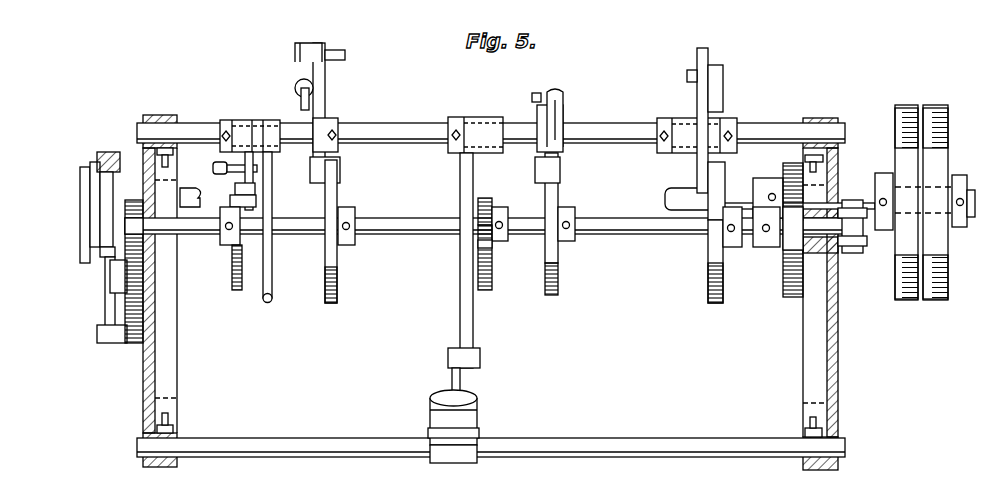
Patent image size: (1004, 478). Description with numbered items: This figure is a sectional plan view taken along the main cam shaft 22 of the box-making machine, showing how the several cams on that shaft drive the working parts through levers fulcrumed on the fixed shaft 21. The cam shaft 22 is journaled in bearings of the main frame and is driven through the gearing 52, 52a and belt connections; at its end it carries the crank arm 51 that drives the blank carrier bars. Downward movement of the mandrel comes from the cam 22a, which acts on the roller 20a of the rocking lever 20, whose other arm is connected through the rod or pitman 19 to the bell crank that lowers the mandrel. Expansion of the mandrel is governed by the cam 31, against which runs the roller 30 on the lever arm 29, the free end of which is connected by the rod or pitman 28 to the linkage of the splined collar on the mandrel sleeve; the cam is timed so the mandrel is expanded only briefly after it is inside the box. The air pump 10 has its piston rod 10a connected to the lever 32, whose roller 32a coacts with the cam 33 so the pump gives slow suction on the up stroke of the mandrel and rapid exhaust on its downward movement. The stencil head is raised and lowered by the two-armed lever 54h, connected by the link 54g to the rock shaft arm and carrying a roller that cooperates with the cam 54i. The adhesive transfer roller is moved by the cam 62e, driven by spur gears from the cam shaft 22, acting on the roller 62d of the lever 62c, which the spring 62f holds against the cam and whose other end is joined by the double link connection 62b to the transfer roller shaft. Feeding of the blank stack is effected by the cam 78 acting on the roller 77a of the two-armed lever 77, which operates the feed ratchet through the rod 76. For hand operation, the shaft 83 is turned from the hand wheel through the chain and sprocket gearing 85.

The air pump 10 is at (465, 423).
The piston rod 10a is at (452, 382).
The rod or pitman 19 is at (717, 102).
The rocking lever 20 is at (700, 100).
The roller 20a is at (722, 165).
The shaft 21 is at (615, 133).
The main cam shaft 22 is at (632, 226).
The cam 22a is at (722, 288).
The rod or pitman 28 is at (557, 122).
The lever arm 29 is at (543, 113).
The roller 30 is at (557, 183).
The cam 31 is at (555, 282).
The lever 32 is at (467, 317).
The roller 32a is at (485, 257).
The cam 33 is at (488, 207).
The crank arm 51 is at (858, 252).
The gearing 52 is at (797, 282).
The gearing 52a is at (797, 165).
The link 54g is at (300, 97).
The two-armed lever 54h is at (320, 98).
The cam 54i is at (330, 200).
The double link connection 62b is at (107, 152).
The lever of the first order 62c is at (107, 290).
The roller 62d is at (118, 340).
The cam 62e is at (112, 268).
The spring 62f is at (100, 252).
The rod 76 is at (265, 290).
The two-armed lever 77 is at (251, 167).
The roller 77a is at (245, 185).
The cam 78 is at (235, 262).
The shaft 83 is at (187, 197).
The chain and sprocket gearing 85 is at (82, 215).